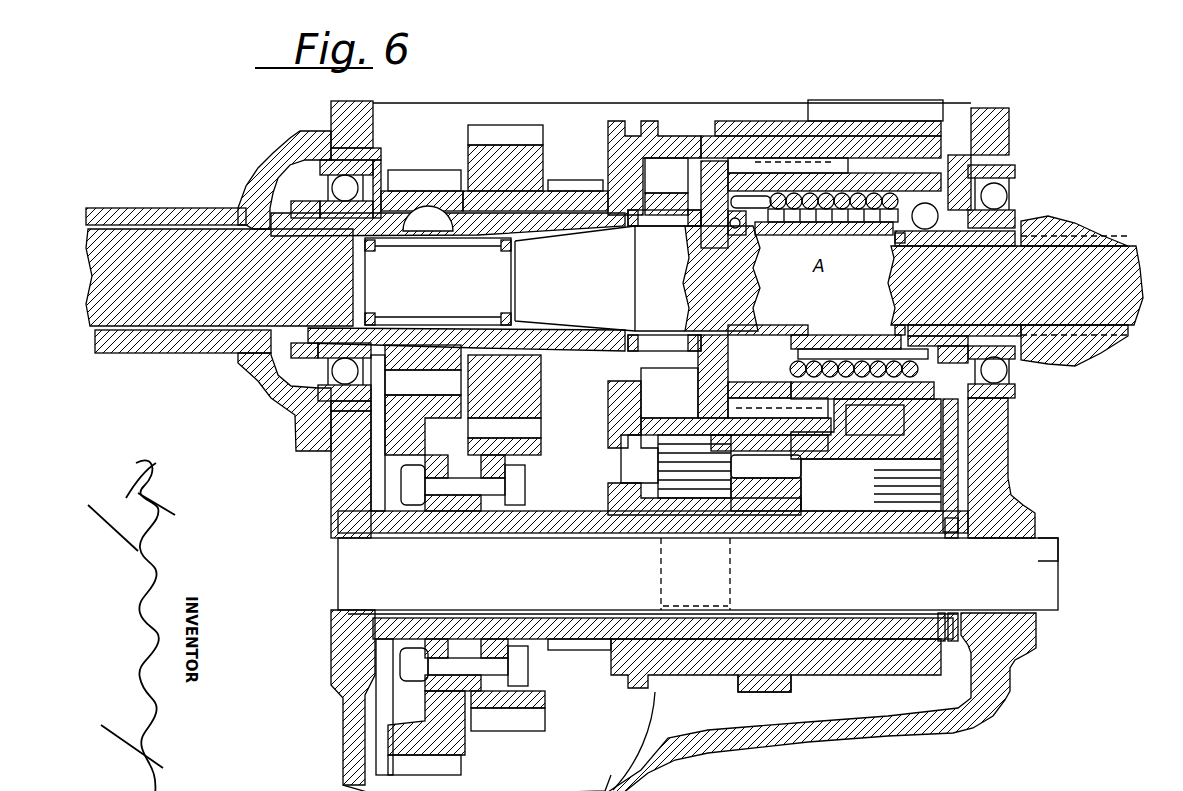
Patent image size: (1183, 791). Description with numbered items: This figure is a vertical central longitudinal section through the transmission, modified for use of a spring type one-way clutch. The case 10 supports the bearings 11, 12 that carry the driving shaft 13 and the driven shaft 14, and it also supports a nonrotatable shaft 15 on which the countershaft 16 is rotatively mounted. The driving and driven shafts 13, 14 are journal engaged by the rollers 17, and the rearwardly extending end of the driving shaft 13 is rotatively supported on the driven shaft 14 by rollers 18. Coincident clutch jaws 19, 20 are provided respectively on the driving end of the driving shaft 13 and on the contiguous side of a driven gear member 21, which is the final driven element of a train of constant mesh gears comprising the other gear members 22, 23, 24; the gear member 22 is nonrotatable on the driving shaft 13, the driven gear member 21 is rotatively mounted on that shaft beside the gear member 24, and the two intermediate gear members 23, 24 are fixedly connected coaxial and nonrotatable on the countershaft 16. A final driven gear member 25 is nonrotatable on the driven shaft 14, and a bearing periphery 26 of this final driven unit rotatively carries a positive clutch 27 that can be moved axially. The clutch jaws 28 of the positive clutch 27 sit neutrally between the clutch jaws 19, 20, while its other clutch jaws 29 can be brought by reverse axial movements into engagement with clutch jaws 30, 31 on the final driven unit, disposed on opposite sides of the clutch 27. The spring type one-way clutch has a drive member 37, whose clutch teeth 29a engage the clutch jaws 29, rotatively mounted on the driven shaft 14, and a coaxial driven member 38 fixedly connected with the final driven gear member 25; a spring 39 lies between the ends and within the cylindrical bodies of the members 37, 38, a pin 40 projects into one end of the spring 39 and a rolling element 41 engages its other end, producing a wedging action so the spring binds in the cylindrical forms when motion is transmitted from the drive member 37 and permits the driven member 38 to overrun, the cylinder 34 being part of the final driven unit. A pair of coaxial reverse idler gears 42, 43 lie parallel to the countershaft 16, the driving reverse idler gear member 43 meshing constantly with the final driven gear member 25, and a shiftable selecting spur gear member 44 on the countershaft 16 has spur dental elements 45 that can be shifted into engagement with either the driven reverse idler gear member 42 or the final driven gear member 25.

The case 10 is at (345, 484).
The bearing 11 is at (283, 145).
The bearing 12 is at (1010, 195).
The driving shaft 13 is at (137, 240).
The driven shaft 14 is at (1128, 243).
The nonrotatable shaft 15 is at (698, 576).
The countershaft 16 is at (570, 530).
The rollers 17 is at (408, 240).
The rollers 18 is at (663, 218).
The clutch jaws 19 is at (548, 176).
The clutch jaws 20 is at (663, 184).
The driven gear member 21 is at (507, 125).
The gear member 22 is at (400, 176).
The gear member 23 is at (438, 757).
The gear member 24 is at (518, 714).
The final driven gear member 25 is at (905, 100).
The bearing periphery 26 is at (763, 125).
The positive clutch 27 is at (670, 128).
The clutch jaws 28 is at (610, 180).
The clutch jaws 29 is at (843, 470).
The clutch teeth 29a is at (735, 150).
The clutch jaws 30 is at (703, 153).
The clutch jaws 31 is at (883, 168).
The cylinder 34 is at (860, 452).
The drive member 37 is at (790, 202).
The driven member 38 is at (835, 202).
The spring 39 is at (810, 330).
The pin 40 is at (757, 222).
The rolling element 41 is at (903, 222).
The driven reverse idler gear member 42 is at (660, 450).
The driving reverse idler gear member 43 is at (920, 483).
The shiftable selecting spur gear member 44 is at (695, 667).
The spur dental elements 45 is at (760, 684).